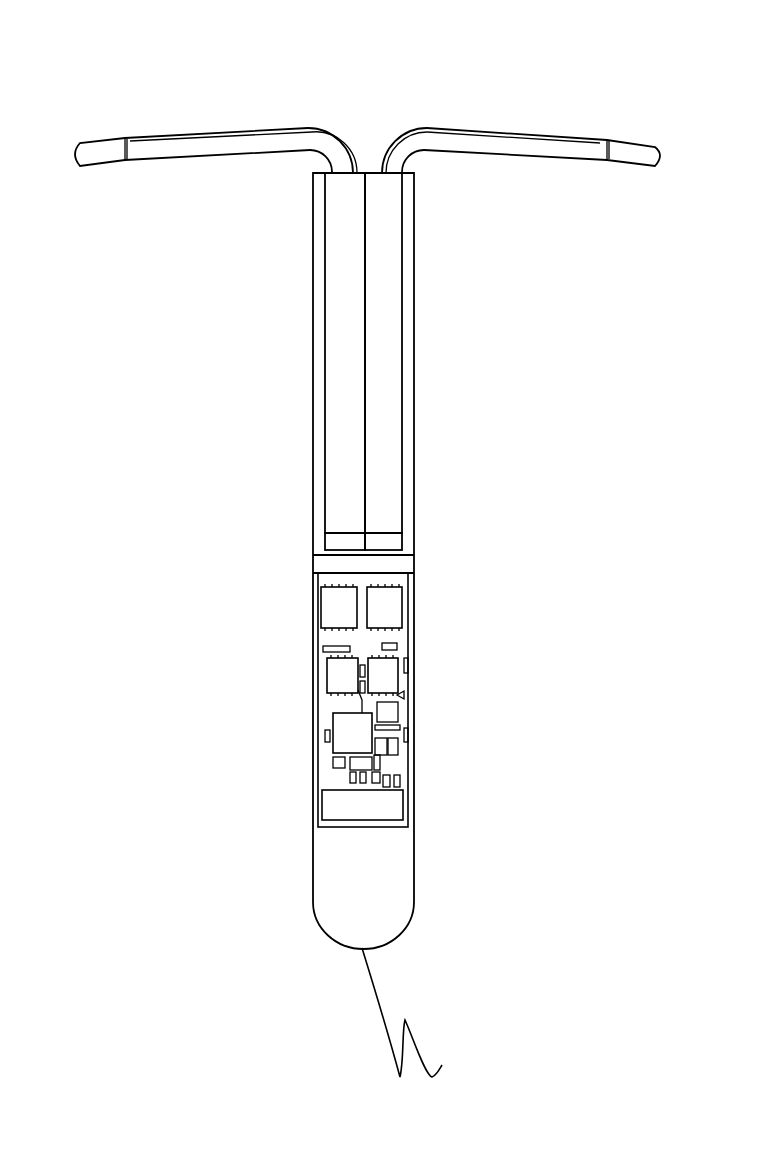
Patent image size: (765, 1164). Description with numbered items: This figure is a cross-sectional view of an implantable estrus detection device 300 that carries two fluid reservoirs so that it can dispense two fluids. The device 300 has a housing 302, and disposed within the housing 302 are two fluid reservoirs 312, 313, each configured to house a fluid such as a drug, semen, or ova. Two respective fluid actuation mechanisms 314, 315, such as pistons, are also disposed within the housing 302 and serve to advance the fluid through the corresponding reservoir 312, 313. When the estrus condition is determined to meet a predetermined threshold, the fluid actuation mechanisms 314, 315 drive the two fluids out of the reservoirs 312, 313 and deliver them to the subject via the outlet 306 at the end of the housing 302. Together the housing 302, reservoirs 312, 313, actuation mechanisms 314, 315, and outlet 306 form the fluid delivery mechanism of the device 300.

The device 300 is at (217, 68).
The housing 302 is at (313, 298).
The outlet 306 is at (363, 173).
The fluid reservoir 312 is at (392, 412).
The fluid reservoir 313 is at (340, 455).
The fluid actuation mechanism 314 is at (388, 545).
The fluid actuation mechanism 315 is at (337, 547).